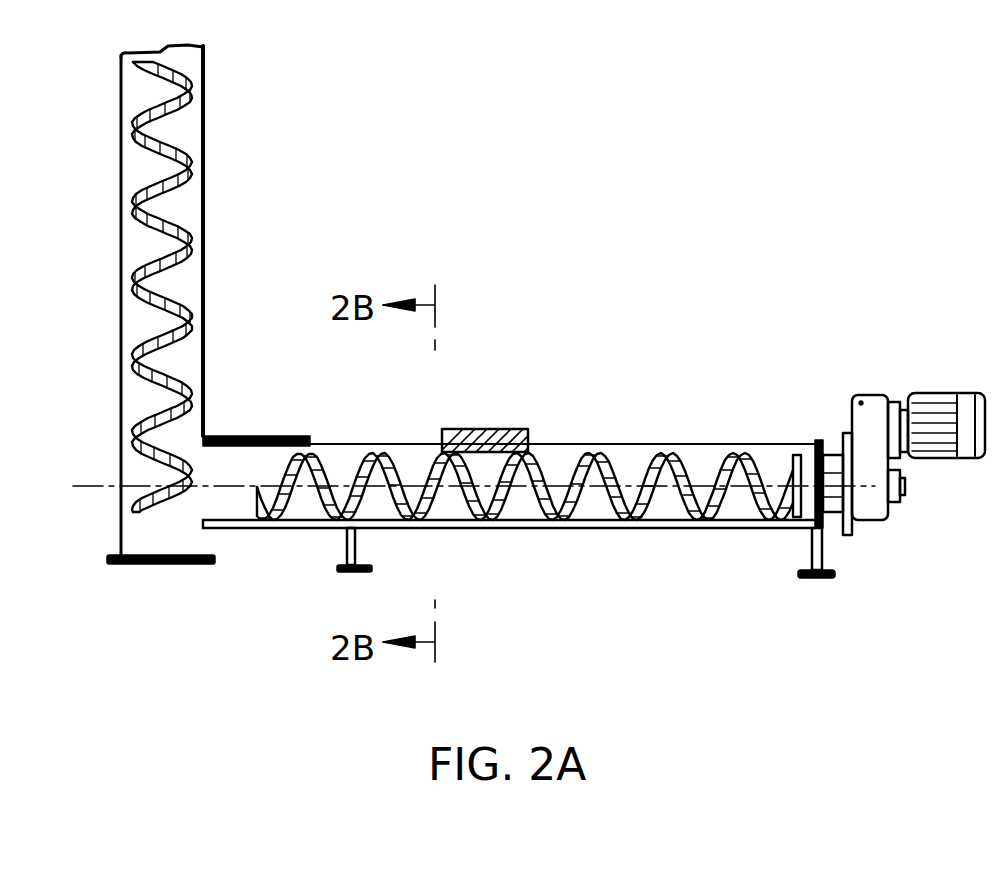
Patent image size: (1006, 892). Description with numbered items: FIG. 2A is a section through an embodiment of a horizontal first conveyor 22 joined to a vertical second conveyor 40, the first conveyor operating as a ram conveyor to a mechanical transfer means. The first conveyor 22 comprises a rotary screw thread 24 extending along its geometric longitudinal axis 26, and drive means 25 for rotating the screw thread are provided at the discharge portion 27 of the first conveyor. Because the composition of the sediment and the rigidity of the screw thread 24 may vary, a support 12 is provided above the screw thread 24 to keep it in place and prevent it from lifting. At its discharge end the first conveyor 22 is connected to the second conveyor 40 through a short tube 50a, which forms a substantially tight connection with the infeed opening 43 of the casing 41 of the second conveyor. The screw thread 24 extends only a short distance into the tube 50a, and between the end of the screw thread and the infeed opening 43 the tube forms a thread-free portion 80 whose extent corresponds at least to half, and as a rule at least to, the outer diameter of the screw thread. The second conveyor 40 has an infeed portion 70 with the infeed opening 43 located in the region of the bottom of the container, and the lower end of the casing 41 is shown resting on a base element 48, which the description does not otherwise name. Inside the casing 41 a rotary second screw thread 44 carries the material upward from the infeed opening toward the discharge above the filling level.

The support 12 is at (492, 432).
The first conveyor 22 is at (620, 530).
The screw thread 24 is at (537, 462).
The drive means 25 is at (935, 395).
The geometric longitudinal axis 26 is at (102, 488).
The discharge portion 27 is at (345, 528).
The second conveyor 40 is at (206, 100).
The casing 41 is at (190, 148).
The infeed opening 43 is at (196, 477).
The second screw thread 44 is at (190, 248).
The base plate 48 is at (183, 518).
The short tube 50a is at (220, 437).
The infeed portion 70 is at (120, 437).
The thread-free portion 80 is at (237, 530).